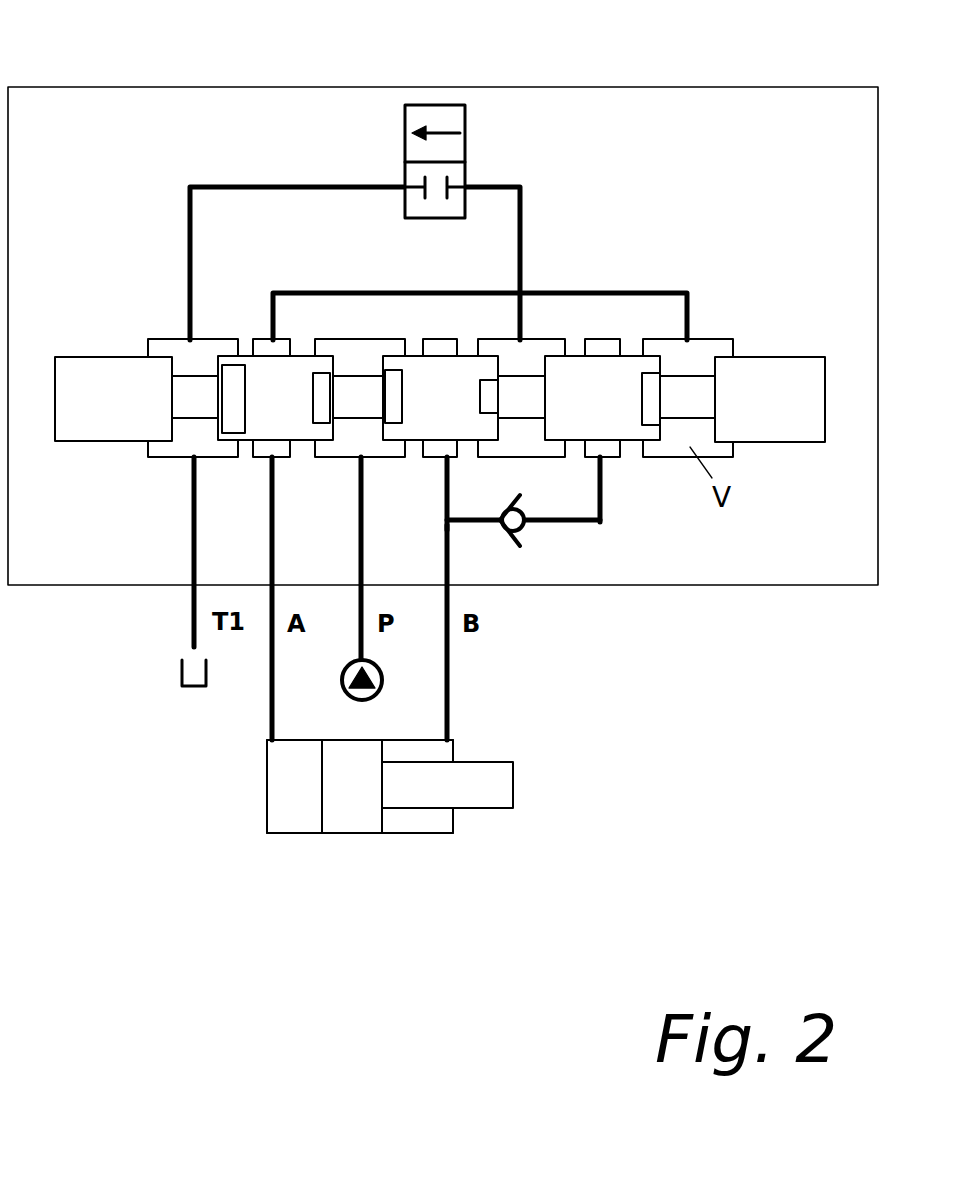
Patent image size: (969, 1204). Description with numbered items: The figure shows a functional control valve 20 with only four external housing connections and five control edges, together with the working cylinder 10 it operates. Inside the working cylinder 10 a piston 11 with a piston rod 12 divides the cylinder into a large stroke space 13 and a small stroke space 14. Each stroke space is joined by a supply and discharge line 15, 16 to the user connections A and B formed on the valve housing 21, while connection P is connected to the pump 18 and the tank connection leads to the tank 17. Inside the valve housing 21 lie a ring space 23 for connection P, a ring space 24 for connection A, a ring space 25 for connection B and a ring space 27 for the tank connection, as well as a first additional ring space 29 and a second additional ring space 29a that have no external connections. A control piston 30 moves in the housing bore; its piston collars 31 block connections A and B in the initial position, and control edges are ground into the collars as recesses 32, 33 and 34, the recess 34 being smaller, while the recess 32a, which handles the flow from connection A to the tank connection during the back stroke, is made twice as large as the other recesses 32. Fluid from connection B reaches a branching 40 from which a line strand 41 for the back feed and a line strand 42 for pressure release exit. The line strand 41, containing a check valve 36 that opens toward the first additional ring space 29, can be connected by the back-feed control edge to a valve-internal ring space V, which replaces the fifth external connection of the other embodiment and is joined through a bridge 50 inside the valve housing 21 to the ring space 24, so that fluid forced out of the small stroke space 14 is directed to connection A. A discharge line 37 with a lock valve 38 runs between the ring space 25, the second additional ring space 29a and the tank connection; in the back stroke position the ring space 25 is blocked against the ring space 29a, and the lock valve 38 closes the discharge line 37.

The working cylinder 10 is at (448, 835).
The piston 11 is at (348, 822).
The piston rod 12 is at (497, 787).
The large stroke space 13 is at (288, 820).
The small stroke space 14 is at (412, 820).
The supply and discharge line 15 is at (270, 687).
The supply and discharge line 16 is at (450, 668).
The tank 17 is at (180, 672).
The pump 18 is at (340, 685).
The control valve 20 is at (796, 70).
The valve housing 21 is at (708, 87).
The ring space 23 is at (365, 447).
The ring space 24 is at (278, 452).
The ring space 25 is at (450, 450).
The ring space 27 is at (195, 443).
The first additional ring space 29 is at (615, 455).
The second additional ring space 29a is at (533, 447).
The control piston 30 is at (185, 407).
The piston collar 31 is at (235, 380).
The recess 32 is at (327, 390).
The recess 32a is at (278, 392).
The recess 33 is at (652, 392).
The recess 34 is at (490, 397).
The check valve 36 is at (527, 525).
The discharge line 37 is at (515, 186).
The lock valve 38 is at (425, 105).
The branching 40 is at (447, 525).
The line strand 41 is at (583, 523).
The line strand 42 is at (440, 483).
The bridge 50 is at (590, 293).